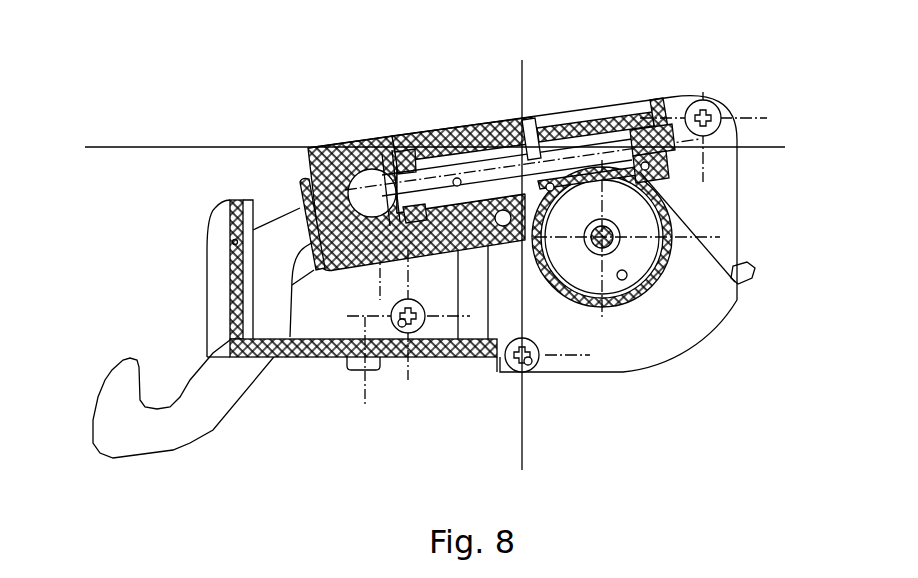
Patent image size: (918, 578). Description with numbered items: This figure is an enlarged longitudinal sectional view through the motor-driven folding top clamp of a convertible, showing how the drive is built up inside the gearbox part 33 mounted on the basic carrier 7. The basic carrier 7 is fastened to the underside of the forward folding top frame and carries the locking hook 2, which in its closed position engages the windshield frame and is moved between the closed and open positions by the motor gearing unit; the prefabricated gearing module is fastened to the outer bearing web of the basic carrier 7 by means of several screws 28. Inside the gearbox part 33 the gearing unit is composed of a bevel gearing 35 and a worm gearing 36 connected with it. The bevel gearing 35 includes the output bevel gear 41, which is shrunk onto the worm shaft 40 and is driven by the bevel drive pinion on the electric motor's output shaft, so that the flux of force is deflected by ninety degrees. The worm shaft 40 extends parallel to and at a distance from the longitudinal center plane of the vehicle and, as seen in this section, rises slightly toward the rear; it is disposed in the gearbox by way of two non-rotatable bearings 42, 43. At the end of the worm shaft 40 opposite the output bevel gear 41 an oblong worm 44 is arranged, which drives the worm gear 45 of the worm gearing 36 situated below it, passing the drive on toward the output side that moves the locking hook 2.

The locking hook 2 is at (108, 367).
The basic carrier 7 is at (233, 240).
The screws 28 is at (400, 332).
The gearbox part 33 is at (448, 132).
The bevel gearing 35 is at (381, 170).
The worm gearing 36 is at (590, 176).
The worm shaft 40 is at (457, 186).
The output bevel gear 41 is at (390, 222).
The non-rotatable bearing 42 is at (423, 212).
The non-rotatable bearing 43 is at (731, 281).
The oblong worm 44 is at (553, 183).
The worm gear 45 is at (626, 280).